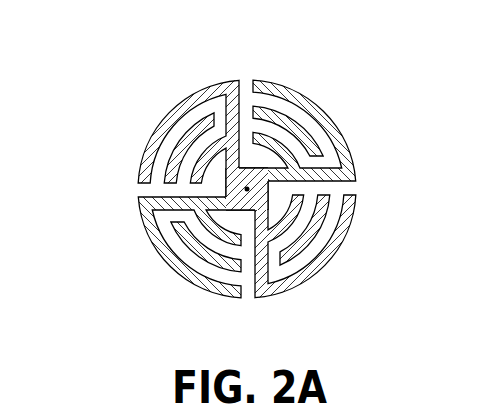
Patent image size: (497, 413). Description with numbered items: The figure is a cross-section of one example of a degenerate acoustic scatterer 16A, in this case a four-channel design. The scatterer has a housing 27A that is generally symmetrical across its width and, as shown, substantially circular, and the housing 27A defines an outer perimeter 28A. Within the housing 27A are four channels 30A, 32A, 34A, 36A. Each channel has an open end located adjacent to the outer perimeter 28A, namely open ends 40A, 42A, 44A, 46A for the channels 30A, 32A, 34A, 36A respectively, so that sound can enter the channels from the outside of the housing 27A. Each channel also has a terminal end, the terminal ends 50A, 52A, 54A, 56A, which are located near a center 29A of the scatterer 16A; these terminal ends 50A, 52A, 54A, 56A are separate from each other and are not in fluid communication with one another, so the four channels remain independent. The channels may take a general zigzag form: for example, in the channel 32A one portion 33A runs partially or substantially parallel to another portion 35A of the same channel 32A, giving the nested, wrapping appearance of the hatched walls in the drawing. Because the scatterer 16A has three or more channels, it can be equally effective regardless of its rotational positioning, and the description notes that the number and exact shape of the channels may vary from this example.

The degenerate acoustic scatterer 16A is at (236, 188).
The housing 27A is at (143, 233).
The perimeter 28A is at (172, 108).
The center 29A is at (235, 95).
The channel 30A is at (182, 102).
The channel 32A is at (322, 123).
The portion of channel 33A is at (341, 105).
The channel 34A is at (312, 248).
The portion of channel 35A is at (308, 135).
The channel 36A is at (177, 248).
The open end 40A is at (139, 188).
The open end 42A is at (248, 86).
The open end 44A is at (350, 190).
The open end 46A is at (248, 297).
The terminal end 50A is at (222, 143).
The terminal end 52A is at (248, 186).
The terminal end 54A is at (330, 210).
The terminal end 56A is at (232, 242).